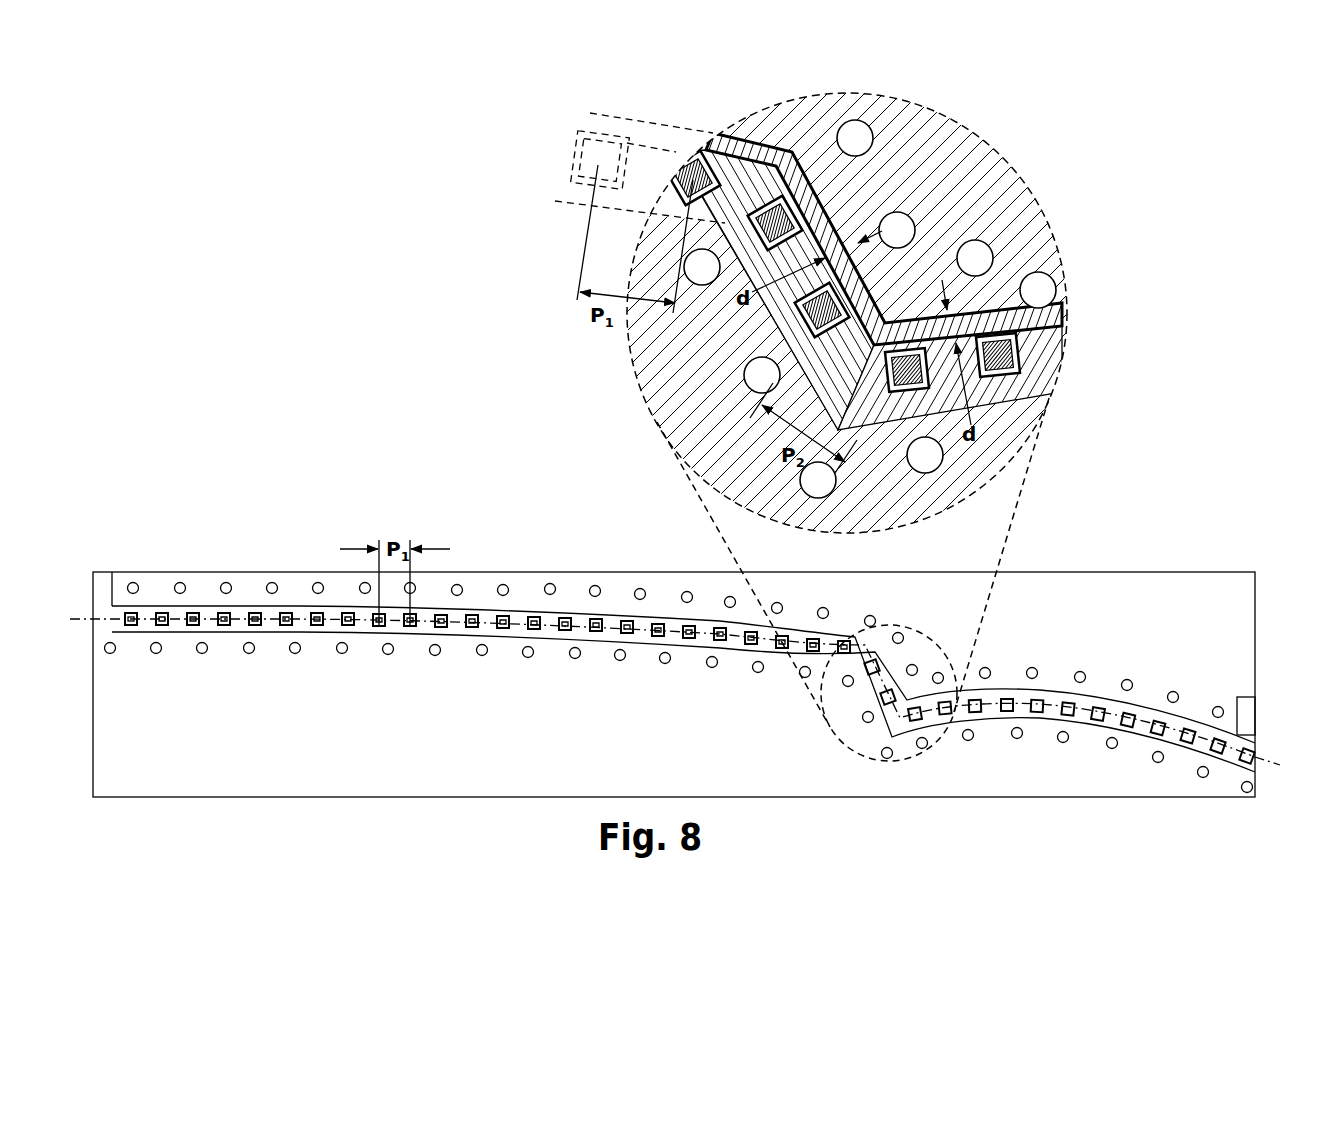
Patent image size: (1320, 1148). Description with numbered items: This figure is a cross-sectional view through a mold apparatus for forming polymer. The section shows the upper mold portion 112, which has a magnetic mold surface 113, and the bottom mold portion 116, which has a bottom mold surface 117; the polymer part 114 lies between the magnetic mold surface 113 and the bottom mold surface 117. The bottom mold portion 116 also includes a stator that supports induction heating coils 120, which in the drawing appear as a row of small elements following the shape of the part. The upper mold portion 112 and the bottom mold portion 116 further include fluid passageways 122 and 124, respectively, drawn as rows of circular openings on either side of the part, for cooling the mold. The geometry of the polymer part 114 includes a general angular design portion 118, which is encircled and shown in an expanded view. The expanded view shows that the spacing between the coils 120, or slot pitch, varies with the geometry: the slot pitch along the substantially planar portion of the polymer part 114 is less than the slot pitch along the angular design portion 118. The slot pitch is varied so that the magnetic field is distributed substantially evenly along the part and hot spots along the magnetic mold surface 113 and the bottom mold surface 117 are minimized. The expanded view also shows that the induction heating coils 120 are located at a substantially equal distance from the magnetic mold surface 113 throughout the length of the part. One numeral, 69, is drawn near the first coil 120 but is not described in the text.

The light emitting diode 69 is at (130, 627).
The upper mold portion 112 is at (765, 603).
The magnetic mold surface 113 is at (798, 630).
The polymer part 114 is at (700, 613).
The bottom mold portion 116 is at (418, 652).
The bottom mold surface 117 is at (492, 614).
The angular design portion 118 is at (997, 640).
The induction heating coils 120 is at (778, 222).
The fluid passageways 122 is at (550, 587).
The fluid passageways 124 is at (574, 653).